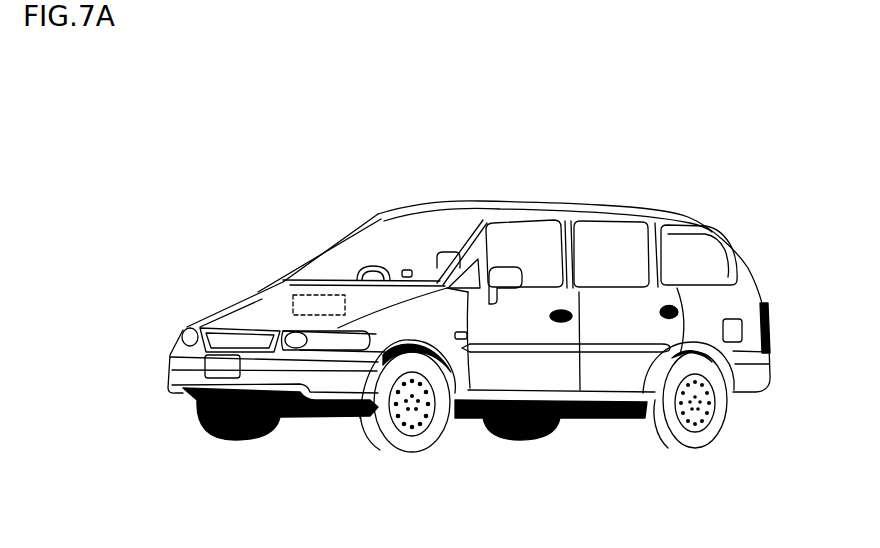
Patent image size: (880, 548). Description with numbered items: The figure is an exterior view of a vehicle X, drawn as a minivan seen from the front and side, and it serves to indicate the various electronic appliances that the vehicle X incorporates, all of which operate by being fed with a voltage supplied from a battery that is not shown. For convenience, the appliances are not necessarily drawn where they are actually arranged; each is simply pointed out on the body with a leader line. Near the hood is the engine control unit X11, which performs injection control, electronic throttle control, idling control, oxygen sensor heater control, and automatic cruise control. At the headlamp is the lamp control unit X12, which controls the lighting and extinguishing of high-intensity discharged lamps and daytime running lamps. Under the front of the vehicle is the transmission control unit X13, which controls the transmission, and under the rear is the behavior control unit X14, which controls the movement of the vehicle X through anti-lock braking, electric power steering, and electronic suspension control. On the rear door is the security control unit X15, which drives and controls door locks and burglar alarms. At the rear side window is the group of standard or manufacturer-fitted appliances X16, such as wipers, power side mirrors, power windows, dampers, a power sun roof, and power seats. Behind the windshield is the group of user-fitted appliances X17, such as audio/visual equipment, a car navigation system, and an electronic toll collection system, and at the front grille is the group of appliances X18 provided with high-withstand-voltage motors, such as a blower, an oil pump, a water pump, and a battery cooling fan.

The vehicle X is at (151, 158).
The engine control unit X11 is at (265, 306).
The lamp control unit X12 is at (183, 328).
The transmission control unit X13 is at (350, 420).
The behavior control unit X14 is at (637, 422).
The security control unit X15 is at (688, 313).
The standard or manufacturer-fitted electronic appliances X16 is at (627, 234).
The user-fitted electronic appliances X17 is at (407, 273).
The high-withstand-voltage motor electronic appliances X18 is at (297, 296).